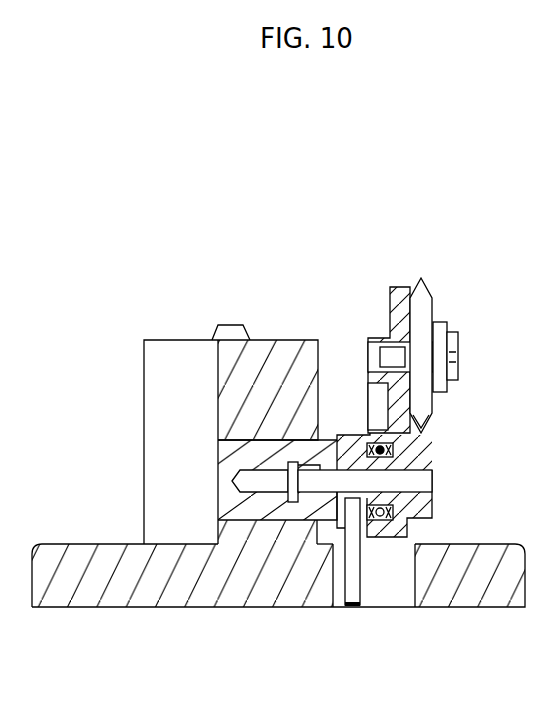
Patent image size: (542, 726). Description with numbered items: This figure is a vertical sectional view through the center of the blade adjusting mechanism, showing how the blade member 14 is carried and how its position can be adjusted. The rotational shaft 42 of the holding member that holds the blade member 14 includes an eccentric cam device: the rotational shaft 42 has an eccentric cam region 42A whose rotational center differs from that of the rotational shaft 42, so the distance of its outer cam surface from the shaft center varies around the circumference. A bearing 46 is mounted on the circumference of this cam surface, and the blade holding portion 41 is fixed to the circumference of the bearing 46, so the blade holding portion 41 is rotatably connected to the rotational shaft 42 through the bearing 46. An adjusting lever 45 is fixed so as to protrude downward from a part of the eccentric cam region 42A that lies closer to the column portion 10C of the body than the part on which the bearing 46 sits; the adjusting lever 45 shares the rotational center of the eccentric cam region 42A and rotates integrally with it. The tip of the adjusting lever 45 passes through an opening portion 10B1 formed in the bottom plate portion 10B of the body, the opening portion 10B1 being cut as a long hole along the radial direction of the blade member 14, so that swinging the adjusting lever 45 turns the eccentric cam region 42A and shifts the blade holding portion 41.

The bottom plate portion 10B is at (58, 543).
The opening portion 10B1 is at (412, 583).
The column portion 10C is at (144, 398).
The blade member 14 is at (423, 297).
The blade holding portion 41 is at (417, 520).
The rotational shaft 42 is at (268, 482).
The eccentric cam region 42A is at (425, 466).
The adjusting lever 45 is at (352, 587).
The bearing 46 is at (392, 440).